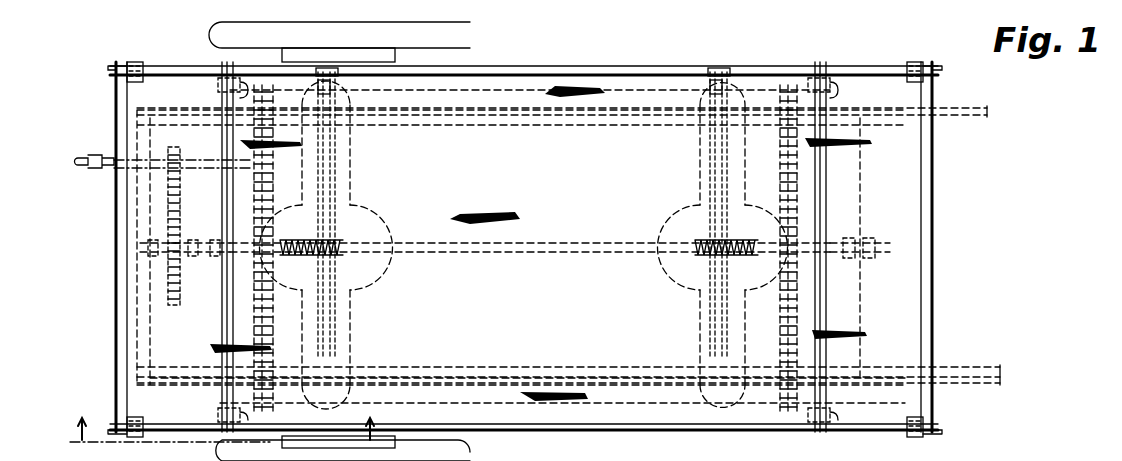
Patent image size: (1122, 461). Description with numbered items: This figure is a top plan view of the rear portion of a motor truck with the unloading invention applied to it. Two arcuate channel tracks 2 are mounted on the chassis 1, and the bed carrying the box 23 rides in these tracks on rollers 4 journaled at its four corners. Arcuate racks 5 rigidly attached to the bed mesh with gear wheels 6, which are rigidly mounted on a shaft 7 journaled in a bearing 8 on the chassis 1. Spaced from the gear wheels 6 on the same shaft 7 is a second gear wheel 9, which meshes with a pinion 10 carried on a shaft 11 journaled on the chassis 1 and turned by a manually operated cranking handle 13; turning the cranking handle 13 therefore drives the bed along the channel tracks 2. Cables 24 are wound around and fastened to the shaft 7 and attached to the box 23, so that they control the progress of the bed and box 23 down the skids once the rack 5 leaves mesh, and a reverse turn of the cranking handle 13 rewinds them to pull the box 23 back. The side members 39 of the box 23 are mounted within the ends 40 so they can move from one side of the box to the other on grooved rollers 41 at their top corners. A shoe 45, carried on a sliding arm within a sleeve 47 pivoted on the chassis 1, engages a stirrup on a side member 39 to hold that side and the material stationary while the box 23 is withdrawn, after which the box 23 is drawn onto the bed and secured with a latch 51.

The chassis 1 is at (971, 366).
The arcuate channel track 2 is at (228, 319).
The roller 4 is at (226, 84).
The arcuate rack 5 is at (268, 322).
The gear wheel 6 is at (270, 212).
The shaft 7 is at (480, 253).
The bearing 8 is at (226, 419).
The second gear wheel 9 is at (172, 304).
The pinion 10 is at (176, 174).
The shaft 11 is at (197, 160).
The cranking handle 13 is at (92, 174).
The box 23 is at (521, 246).
The cable 24 is at (345, 250).
The side member 39 is at (612, 66).
The end 40 is at (129, 300).
The roller 41 is at (112, 82).
The shoe 45 is at (330, 72).
The sleeve 47 is at (335, 160).
The latch 51 is at (206, 256).